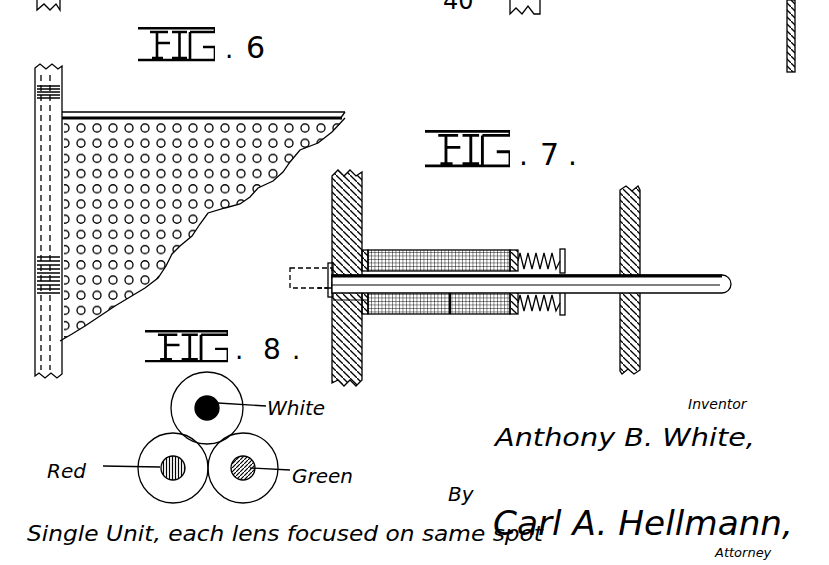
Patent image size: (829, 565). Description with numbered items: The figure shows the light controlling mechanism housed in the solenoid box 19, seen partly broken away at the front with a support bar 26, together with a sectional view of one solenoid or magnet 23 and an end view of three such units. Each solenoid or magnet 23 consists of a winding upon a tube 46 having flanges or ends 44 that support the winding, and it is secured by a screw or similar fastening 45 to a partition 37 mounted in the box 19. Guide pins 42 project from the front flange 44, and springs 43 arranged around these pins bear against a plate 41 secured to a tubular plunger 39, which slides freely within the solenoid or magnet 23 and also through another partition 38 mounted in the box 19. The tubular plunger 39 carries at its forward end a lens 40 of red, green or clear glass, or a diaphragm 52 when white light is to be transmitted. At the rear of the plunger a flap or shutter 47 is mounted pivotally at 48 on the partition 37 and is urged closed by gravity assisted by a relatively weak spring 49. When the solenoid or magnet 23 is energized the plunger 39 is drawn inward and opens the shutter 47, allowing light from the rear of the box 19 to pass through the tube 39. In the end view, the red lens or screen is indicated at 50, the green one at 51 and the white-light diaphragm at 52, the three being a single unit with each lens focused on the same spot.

In FIG. 6, the box 19 is at (228, 104).
In FIG. 6, the support bar 26 is at (62, 91).
In FIG. 6, the partition 38 is at (308, 124).
In FIG. 6, the tubular plunger 39 is at (258, 176).
In FIG. 7, the tubular plunger 39 is at (599, 296).
In FIG. 7, the partition 37 is at (364, 192).
In FIG. 7, the flanges or ends 44 is at (366, 252).
In FIG. 7, the solenoid or magnet 23 is at (443, 251).
In FIG. 8, the solenoid or magnet 23 is at (186, 413).
In FIG. 7, the springs 43 is at (541, 259).
In FIG. 7, the guide pins 42 is at (565, 265).
In FIG. 7, the lens 40 is at (729, 285).
In FIG. 7, the plate 41 is at (560, 313).
In FIG. 7, the tube 46 is at (450, 315).
In FIG. 7, the screw or similar fastening 45 is at (333, 302).
In FIG. 7, the flap or shutter 47 is at (318, 291).
In FIG. 7, the pivot 48 is at (330, 263).
In FIG. 7, the spring 49 is at (326, 262).
In FIG. 8, the diaphragm 52 is at (197, 400).
In FIG. 8, the red color screen or red lens 50 is at (162, 473).
In FIG. 8, the green color screen or green lens 51 is at (238, 478).